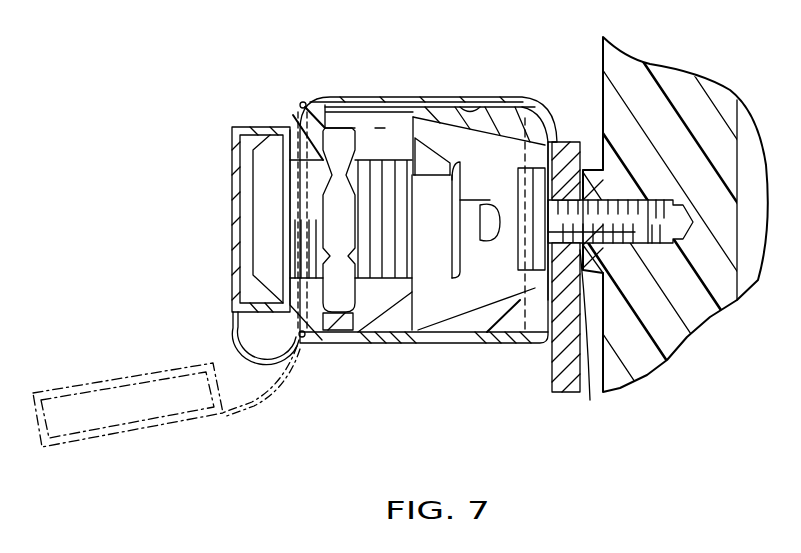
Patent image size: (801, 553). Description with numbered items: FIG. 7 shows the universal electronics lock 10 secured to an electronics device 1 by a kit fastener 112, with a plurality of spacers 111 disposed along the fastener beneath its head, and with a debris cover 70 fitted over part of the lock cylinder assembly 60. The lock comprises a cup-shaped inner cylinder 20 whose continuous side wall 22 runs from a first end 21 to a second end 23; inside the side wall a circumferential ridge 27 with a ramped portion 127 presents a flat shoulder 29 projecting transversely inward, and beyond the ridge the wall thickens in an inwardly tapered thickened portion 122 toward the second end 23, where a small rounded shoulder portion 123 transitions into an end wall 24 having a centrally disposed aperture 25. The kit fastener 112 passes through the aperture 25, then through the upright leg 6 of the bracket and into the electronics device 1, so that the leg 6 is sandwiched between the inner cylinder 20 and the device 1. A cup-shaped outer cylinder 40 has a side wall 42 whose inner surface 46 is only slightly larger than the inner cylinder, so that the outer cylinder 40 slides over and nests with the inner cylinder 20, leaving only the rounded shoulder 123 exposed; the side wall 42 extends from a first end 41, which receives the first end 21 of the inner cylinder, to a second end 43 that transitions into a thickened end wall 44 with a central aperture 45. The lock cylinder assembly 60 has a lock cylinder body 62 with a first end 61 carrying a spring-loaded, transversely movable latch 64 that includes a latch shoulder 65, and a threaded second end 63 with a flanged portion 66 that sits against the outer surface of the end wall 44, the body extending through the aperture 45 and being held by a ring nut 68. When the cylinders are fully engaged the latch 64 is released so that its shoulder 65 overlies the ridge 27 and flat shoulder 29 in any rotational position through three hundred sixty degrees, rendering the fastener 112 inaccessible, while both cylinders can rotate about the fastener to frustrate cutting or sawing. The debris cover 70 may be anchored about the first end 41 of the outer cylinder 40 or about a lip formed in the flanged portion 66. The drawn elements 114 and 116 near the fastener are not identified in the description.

The electronics device 1 is at (683, 73).
The upright leg 6 is at (556, 148).
The universal electronics lock 10 is at (503, 448).
The inner cylinder 20 is at (505, 98).
The first end 21 is at (358, 343).
The side wall 22 is at (465, 343).
The second end 23 is at (522, 343).
The end wall 24 is at (547, 265).
The centrally-disposed aperture 25 is at (584, 178).
The circumferential ridge 27 is at (428, 133).
The flat shoulder 29 is at (422, 343).
The outer cylinder 40 is at (385, 97).
The first end 41 is at (515, 100).
The side wall 42 is at (445, 100).
The second end 43 is at (342, 97).
The end wall 44 is at (302, 101).
The centrally-disposed aperture 45 is at (320, 158).
The inner surface 46 is at (476, 107).
The lock cylinder assembly 60 is at (281, 418).
The first end 61 is at (432, 277).
The lock cylinder body 62 is at (340, 288).
The second end 63 is at (300, 245).
The latch 64 is at (440, 158).
The latch shoulder 65 is at (400, 145).
The flanged portion 66 is at (260, 270).
The ring nut 68 is at (342, 323).
The debris cover 70 is at (232, 185).
The spacers 111 is at (445, 196).
The kit fastener 112 is at (620, 190).
The screw head recess 114 is at (485, 225).
The washer 116 is at (606, 250).
The thickened portion 122 is at (545, 285).
The rounded shoulder portion 123 is at (548, 108).
The ramped portion 127 is at (385, 130).